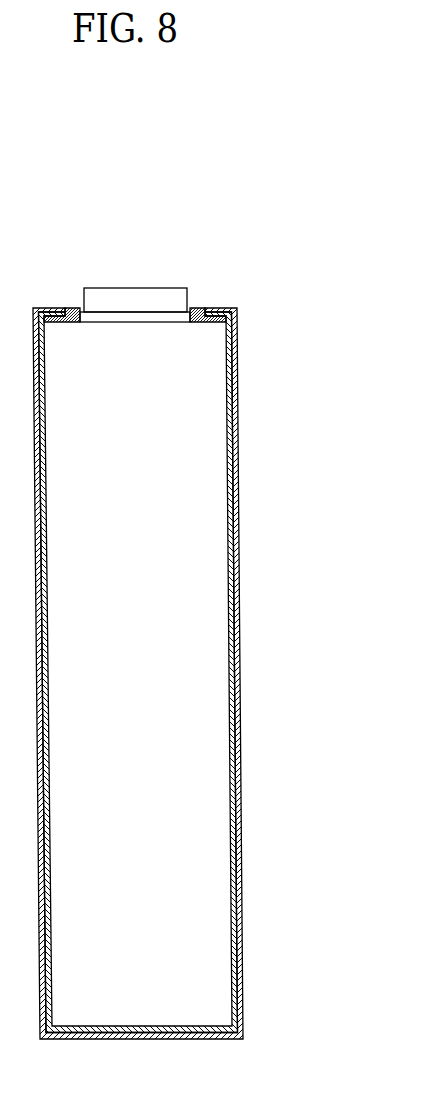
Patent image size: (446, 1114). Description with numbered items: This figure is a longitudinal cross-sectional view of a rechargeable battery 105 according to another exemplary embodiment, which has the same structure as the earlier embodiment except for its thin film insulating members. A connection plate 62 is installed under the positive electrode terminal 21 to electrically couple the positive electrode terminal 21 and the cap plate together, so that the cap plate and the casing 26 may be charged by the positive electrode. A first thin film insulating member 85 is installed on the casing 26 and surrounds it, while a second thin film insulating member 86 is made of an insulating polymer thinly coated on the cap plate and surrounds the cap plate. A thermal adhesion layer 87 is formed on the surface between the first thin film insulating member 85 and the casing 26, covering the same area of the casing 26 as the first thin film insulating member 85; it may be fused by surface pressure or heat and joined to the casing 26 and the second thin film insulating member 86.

The rechargeable battery 105 is at (155, 181).
The casing 26 is at (203, 700).
The first thin film insulating member 85 is at (238, 520).
The thermal adhesion layer 87 is at (231, 577).
The second thin film insulating member 86 is at (200, 308).
The connection plate 62 is at (109, 319).
The positive electrode terminal 21 is at (134, 298).